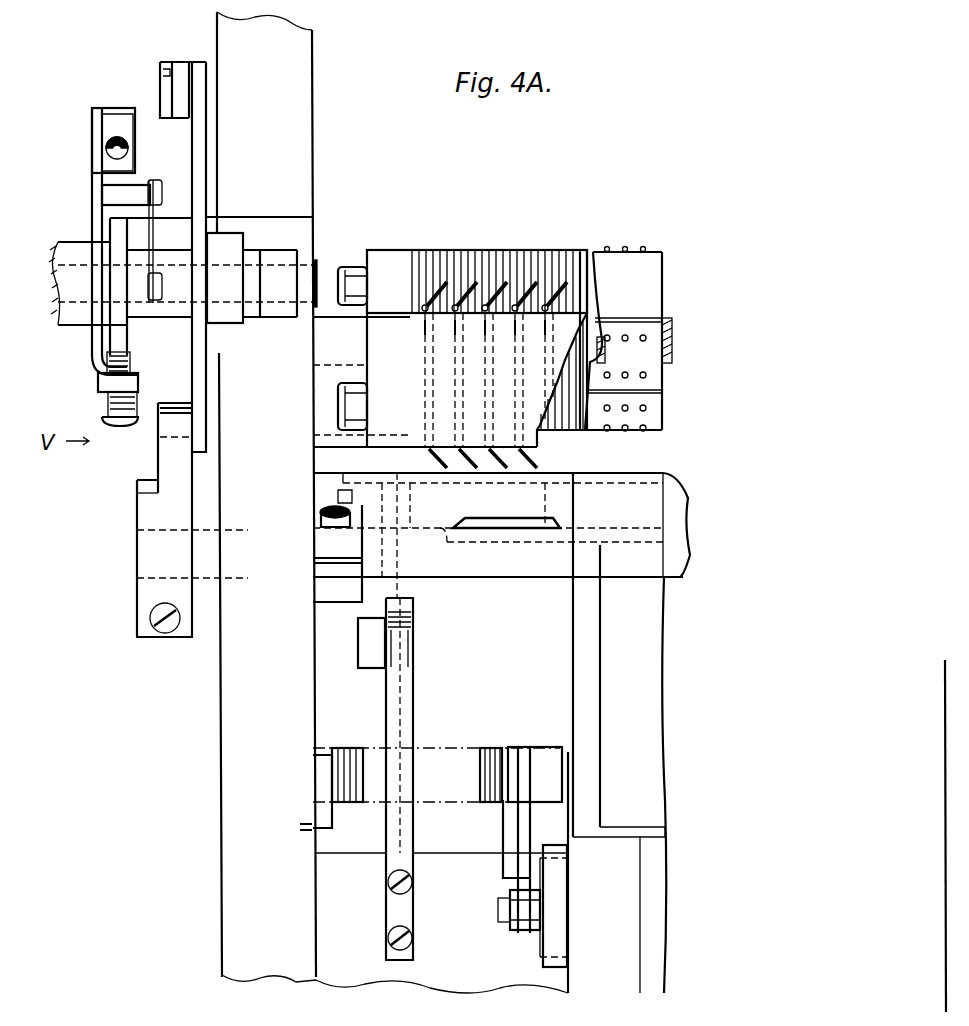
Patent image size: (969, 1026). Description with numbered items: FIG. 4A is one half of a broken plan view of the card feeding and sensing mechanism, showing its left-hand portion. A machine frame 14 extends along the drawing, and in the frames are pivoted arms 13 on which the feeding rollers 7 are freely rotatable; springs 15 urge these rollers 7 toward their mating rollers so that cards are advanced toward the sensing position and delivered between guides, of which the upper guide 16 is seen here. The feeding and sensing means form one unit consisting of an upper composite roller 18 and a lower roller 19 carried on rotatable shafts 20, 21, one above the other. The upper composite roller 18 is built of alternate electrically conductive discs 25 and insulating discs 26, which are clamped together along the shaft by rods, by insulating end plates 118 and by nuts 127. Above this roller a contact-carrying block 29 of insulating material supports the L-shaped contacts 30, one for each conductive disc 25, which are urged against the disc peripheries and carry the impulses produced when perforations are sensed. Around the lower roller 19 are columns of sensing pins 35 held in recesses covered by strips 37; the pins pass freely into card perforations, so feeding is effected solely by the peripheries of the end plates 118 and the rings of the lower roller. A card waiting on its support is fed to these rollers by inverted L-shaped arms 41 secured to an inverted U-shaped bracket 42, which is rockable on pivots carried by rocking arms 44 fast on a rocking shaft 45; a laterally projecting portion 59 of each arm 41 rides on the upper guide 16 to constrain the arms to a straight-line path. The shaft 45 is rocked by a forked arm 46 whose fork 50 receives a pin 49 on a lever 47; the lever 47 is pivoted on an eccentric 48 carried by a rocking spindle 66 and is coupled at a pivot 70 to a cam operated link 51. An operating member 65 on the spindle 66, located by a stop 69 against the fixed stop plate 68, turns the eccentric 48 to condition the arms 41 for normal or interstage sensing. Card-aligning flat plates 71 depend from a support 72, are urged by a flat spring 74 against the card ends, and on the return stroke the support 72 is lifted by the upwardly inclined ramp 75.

The feeding rollers 7 is at (557, 904).
The arms 13 is at (520, 811).
The machine frames 14 is at (229, 694).
The springs 15 is at (477, 782).
The upper guide 16 is at (650, 960).
The upper composite roller 18 is at (534, 250).
The lower roller 19 is at (650, 252).
The rotatable shaft 20 is at (599, 315).
The rotatable shaft 21 is at (660, 345).
The electrically conductive discs 25 is at (440, 250).
The insulating discs 26 is at (447, 256).
The contact-carrying block 29 is at (565, 315).
The L-shaped contacts 30 is at (430, 322).
The sensing pins 35 is at (621, 380).
The strips 37 is at (620, 365).
The inverted L-shaped arms 41 is at (580, 590).
The inverted U-shaped bracket 42 is at (502, 512).
The rocking arms 44 is at (349, 598).
The rocking shaft 45 is at (543, 565).
The forked arm 46 is at (140, 516).
The lever 47 is at (198, 401).
The eccentric 48 is at (243, 248).
The pin 49 is at (157, 428).
The fork 50 is at (165, 458).
The cam operated link 51 is at (178, 87).
The laterally projecting portion 59 is at (627, 836).
The operating member 65 is at (102, 188).
The rocking spindle 66 is at (47, 268).
The fixed stop 68 is at (118, 335).
The stop 69 is at (108, 163).
The pivot 70 is at (166, 117).
The flat plates 71 is at (360, 641).
The support 72 is at (404, 598).
The flat spring 74 is at (392, 652).
The upwardly inclined ramp 75 is at (408, 836).
The plates 118 is at (402, 250).
The nuts 127 is at (357, 262).